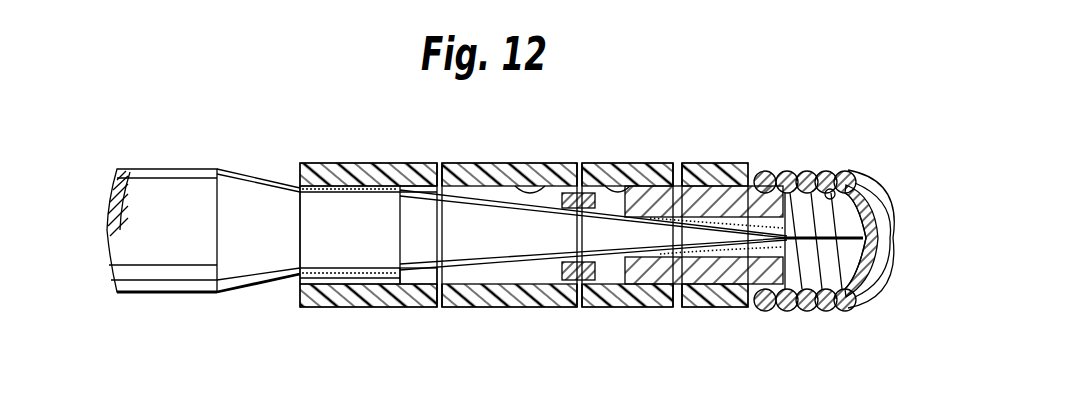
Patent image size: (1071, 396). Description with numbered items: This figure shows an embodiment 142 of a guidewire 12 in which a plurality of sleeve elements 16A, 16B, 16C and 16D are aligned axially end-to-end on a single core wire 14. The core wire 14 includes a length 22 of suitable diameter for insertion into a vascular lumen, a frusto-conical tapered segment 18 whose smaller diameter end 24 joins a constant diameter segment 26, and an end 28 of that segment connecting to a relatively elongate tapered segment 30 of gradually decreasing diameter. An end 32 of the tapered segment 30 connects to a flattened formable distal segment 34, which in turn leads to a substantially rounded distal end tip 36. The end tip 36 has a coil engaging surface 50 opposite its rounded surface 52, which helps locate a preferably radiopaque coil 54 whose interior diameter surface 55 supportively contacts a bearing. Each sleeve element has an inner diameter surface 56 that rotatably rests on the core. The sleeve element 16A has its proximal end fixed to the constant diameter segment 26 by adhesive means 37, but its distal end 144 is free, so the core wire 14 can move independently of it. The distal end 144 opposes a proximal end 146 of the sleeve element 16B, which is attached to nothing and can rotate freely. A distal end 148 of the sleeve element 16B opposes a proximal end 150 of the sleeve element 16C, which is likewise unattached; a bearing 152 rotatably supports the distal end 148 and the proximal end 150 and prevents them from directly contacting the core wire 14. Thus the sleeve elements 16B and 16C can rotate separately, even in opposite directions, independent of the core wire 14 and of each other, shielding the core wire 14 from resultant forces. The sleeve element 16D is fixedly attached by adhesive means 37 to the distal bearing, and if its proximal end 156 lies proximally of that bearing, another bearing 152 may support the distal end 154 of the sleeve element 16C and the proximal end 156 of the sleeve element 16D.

The guidewire 12 is at (170, 160).
The core wire 14 is at (160, 274).
The sleeve element 16A is at (372, 290).
The sleeve element 16B is at (552, 305).
The sleeve element 16C is at (662, 305).
The sleeve element 16D is at (732, 307).
The tapered segment 18 is at (256, 240).
The length 22 is at (179, 236).
The smaller diameter end 24 is at (300, 186).
The constant diameter segment 26 is at (332, 254).
The end 28 is at (418, 284).
The tapered segment 30 is at (516, 258).
The end 32 is at (800, 172).
The formable distal segment 34 is at (858, 290).
The distal end tip 36 is at (884, 205).
The adhesive means 37 is at (296, 276).
The coil engaging surface 50 is at (848, 300).
The rounded surface 52 is at (886, 262).
The coil 54 is at (778, 310).
The interior diameter surface 55 is at (826, 188).
The inner diameter surface 56 is at (545, 186).
The embodiment 142 is at (574, 148).
The distal end 144 is at (440, 180).
The proximal end 146 is at (440, 300).
The distal end 148 is at (570, 166).
The proximal end 150 is at (585, 193).
The bearing 152 is at (585, 282).
The distal end 154 is at (695, 186).
The proximal end 156 is at (688, 186).